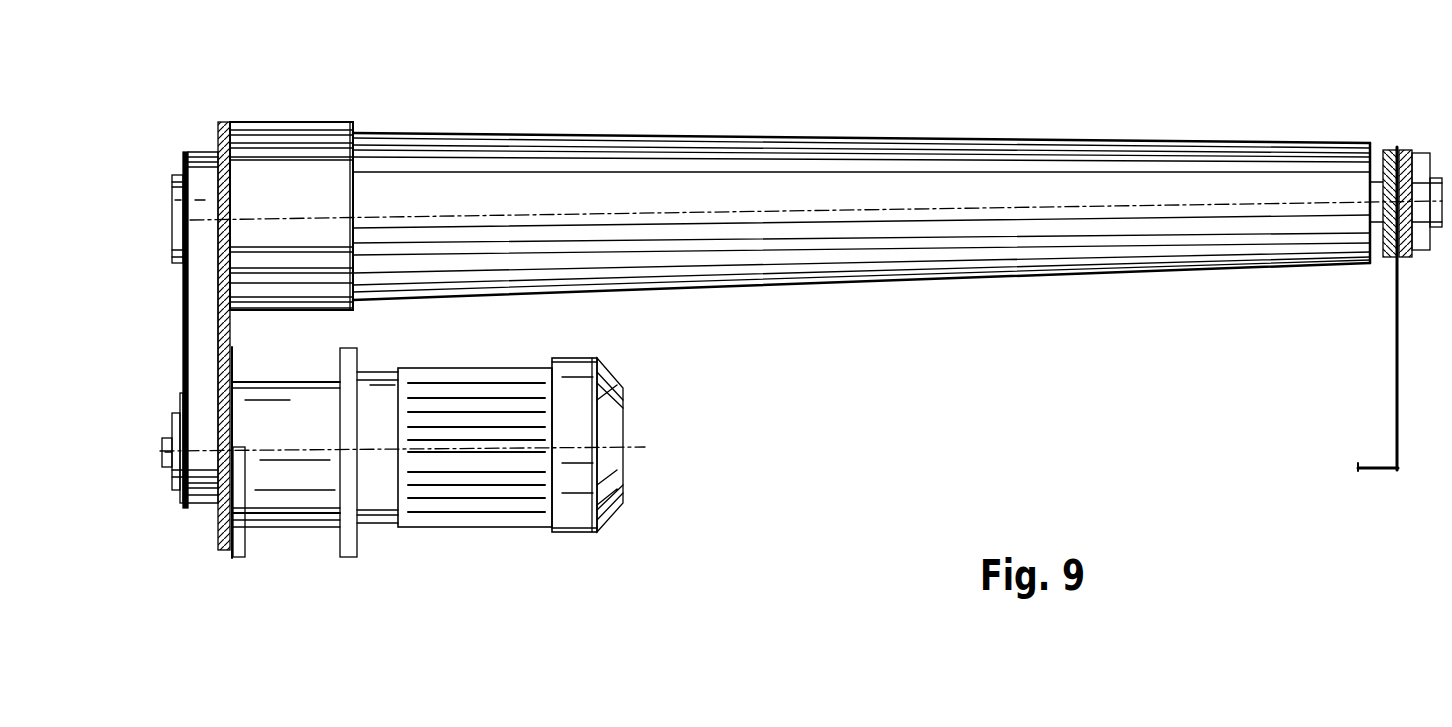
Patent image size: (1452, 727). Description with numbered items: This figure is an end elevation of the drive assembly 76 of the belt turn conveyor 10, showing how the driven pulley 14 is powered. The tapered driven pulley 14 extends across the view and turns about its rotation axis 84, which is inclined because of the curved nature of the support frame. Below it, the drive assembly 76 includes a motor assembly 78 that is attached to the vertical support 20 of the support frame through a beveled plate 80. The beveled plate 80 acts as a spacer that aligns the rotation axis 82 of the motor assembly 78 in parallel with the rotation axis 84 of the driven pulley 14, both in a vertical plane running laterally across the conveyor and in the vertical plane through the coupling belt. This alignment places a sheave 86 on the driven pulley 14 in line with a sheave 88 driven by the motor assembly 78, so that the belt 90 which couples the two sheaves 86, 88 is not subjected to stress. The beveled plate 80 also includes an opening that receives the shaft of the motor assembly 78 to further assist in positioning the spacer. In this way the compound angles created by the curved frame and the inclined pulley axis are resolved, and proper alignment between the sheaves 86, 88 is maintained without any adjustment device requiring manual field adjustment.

The belt turn conveyor 10 is at (680, 135).
The driven pulley 14 is at (942, 138).
The vertical support 20 is at (232, 332).
The drive assembly 76 is at (489, 346).
The motor assembly 78 is at (598, 368).
The beveled plate 80 is at (233, 560).
The rotation axis 82 is at (645, 447).
The rotation axis 84 is at (478, 218).
The sheave 86 is at (185, 152).
The sheave 88 is at (184, 508).
The belt 90 is at (184, 322).